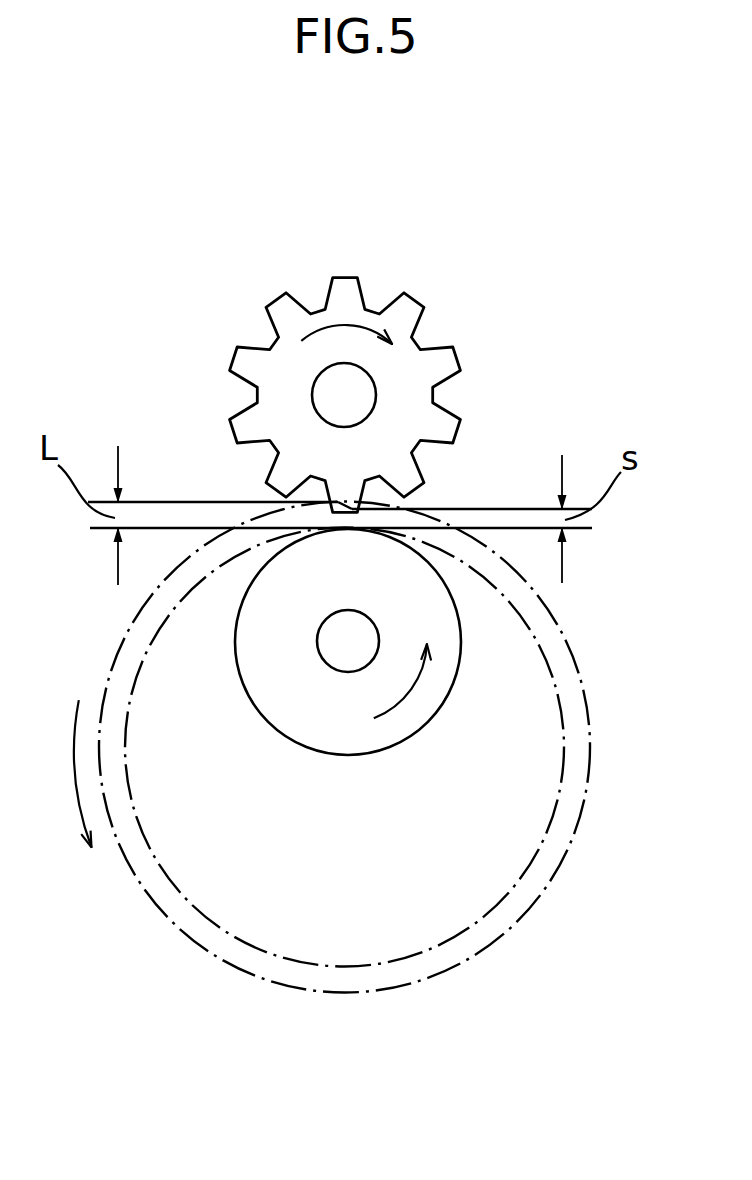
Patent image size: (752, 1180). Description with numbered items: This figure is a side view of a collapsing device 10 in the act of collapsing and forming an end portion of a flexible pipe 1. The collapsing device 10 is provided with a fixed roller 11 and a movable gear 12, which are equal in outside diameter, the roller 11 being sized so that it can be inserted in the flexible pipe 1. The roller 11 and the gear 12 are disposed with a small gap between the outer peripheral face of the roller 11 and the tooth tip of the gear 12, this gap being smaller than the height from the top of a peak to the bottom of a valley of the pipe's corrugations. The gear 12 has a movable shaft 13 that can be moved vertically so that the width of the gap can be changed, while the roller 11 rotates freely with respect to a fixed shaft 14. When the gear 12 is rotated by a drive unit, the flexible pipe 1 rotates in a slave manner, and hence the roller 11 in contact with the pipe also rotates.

The flexible pipe 1 is at (585, 665).
The collapsing device 10 is at (309, 353).
The fixed roller 11 is at (322, 725).
The movable gear 12 is at (407, 308).
The movable shaft 13 is at (330, 398).
The fixed shaft 14 is at (327, 650).